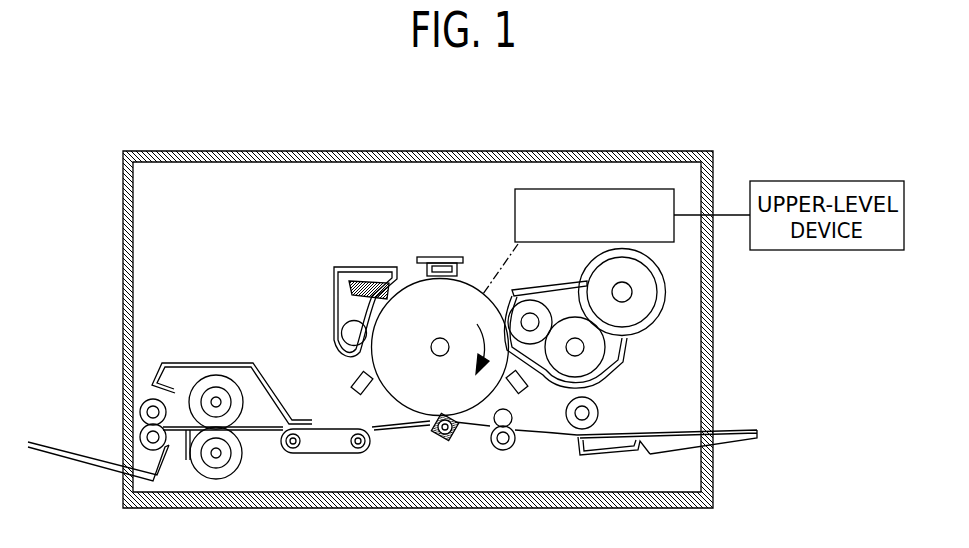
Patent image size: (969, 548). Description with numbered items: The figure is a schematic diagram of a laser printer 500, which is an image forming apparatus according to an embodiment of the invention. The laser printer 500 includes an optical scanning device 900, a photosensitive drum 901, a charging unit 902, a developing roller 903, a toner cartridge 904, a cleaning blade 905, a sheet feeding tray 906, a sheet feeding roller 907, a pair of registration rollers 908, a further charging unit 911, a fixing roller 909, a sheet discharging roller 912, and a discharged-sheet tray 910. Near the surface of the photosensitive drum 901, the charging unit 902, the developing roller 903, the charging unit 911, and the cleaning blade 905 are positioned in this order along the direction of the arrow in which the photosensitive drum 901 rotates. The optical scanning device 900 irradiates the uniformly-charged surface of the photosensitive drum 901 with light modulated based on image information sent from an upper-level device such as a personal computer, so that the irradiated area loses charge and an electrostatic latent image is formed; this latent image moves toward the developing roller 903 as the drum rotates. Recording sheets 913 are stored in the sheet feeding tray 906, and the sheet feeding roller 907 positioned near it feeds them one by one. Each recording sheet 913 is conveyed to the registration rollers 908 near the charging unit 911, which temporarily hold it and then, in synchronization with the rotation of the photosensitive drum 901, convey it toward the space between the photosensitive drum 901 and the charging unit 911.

The laser printer 500 is at (503, 133).
The optical scanning device 900 is at (617, 187).
The photosensitive drum 901 is at (413, 278).
The charging unit 902 is at (437, 258).
The developing roller 903 is at (552, 308).
The toner cartridge 904 is at (661, 318).
The cleaning blade 905 is at (336, 302).
The sheet feeding tray 906 is at (733, 446).
The sheet feeding roller 907 is at (596, 403).
The pair of registration rollers 908 is at (508, 449).
The fixing roller 909 is at (216, 375).
The discharged-sheet tray 910 is at (58, 458).
The charging unit 911 is at (432, 434).
The sheet discharging roller 912 is at (137, 398).
The recording sheet 913 is at (660, 433).